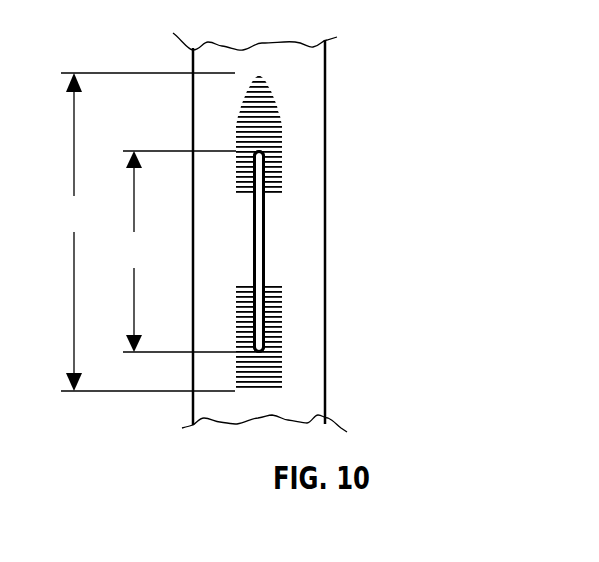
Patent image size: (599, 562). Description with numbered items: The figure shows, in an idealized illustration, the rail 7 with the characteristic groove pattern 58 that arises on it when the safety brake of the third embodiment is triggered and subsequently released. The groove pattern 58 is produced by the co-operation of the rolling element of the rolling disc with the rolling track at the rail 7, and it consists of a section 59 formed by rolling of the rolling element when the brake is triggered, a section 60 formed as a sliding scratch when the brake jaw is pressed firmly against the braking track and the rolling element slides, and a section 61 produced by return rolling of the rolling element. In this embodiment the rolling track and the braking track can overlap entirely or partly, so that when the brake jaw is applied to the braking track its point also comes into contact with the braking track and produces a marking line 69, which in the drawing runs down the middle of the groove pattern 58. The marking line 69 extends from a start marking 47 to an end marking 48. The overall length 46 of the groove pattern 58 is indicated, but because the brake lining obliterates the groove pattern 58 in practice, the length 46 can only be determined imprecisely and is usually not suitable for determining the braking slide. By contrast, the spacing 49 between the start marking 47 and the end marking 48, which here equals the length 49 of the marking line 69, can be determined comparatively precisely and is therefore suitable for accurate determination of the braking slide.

The rail 7 is at (307, 62).
The length of the groove pattern 46 is at (148, 232).
The start marking 47 is at (282, 155).
The end marking 48 is at (258, 353).
The spacing 49 is at (179, 251).
The groove pattern 58 is at (350, 227).
The section 59 is at (240, 108).
The section 60 is at (360, 252).
The section 61 is at (270, 328).
The marking line 69 is at (263, 205).